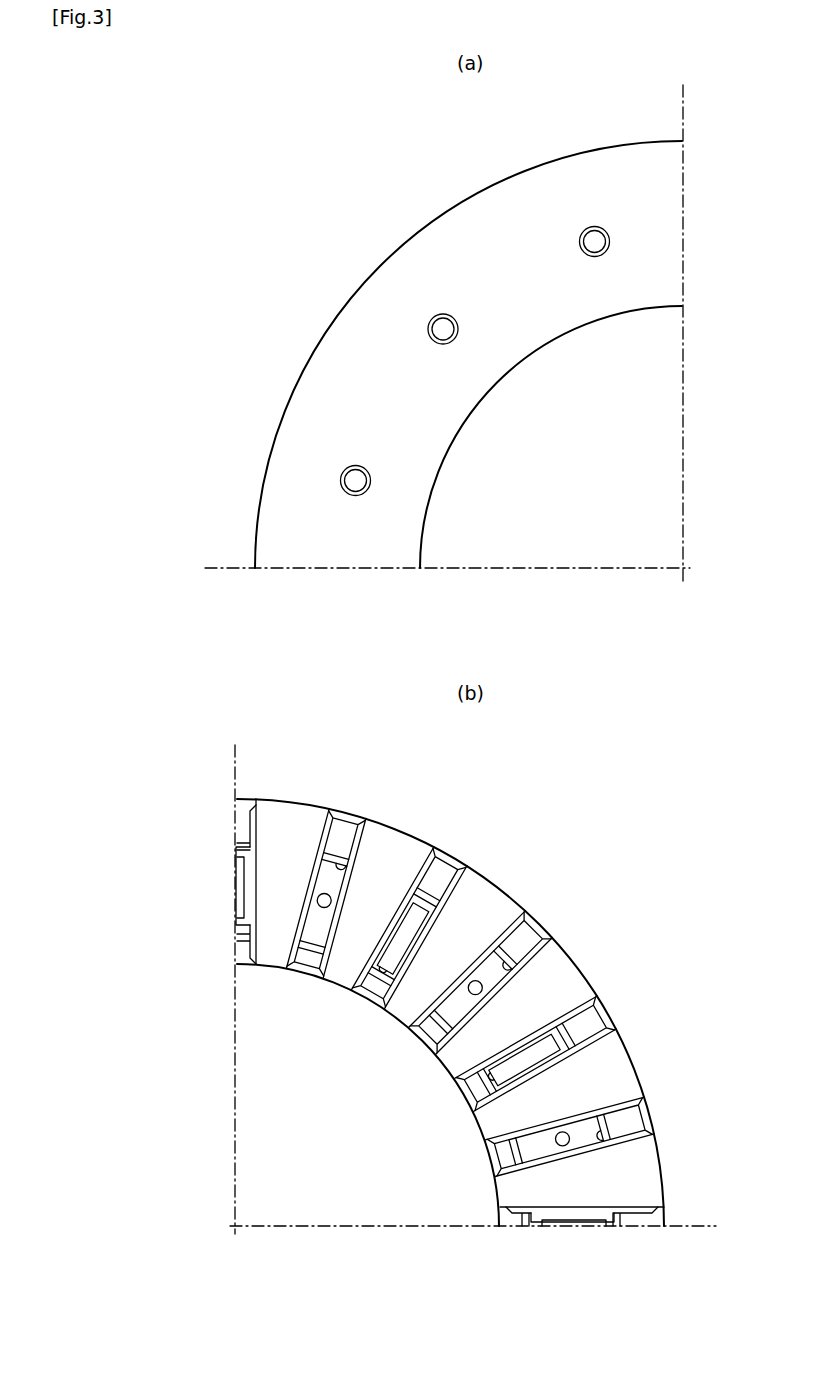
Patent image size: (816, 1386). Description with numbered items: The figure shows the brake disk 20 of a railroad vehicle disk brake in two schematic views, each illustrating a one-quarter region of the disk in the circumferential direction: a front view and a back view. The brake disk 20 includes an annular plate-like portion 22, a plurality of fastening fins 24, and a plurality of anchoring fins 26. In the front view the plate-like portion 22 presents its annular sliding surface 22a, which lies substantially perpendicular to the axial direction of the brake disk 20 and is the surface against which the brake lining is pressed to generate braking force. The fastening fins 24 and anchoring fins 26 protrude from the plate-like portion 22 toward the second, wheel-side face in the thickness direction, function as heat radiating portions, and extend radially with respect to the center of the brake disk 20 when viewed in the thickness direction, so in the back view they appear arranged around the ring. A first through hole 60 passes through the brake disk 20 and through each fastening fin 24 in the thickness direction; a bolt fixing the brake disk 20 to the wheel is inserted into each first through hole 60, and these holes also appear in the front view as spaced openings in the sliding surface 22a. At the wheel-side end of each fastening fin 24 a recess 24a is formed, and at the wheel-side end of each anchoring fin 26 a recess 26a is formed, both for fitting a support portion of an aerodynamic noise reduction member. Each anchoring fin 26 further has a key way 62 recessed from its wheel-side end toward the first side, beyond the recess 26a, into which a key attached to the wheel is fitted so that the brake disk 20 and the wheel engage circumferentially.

The brake disk 20 is at (200, 194).
The plate-like portion 22 is at (411, 232).
The sliding surface 22a is at (516, 188).
The fastening fin 24 is at (347, 818).
The recess 24a is at (350, 866).
The anchoring fin 26 is at (245, 800).
The recess 26a is at (447, 897).
The first through hole 60 is at (596, 258).
The key way 62 is at (540, 1228).